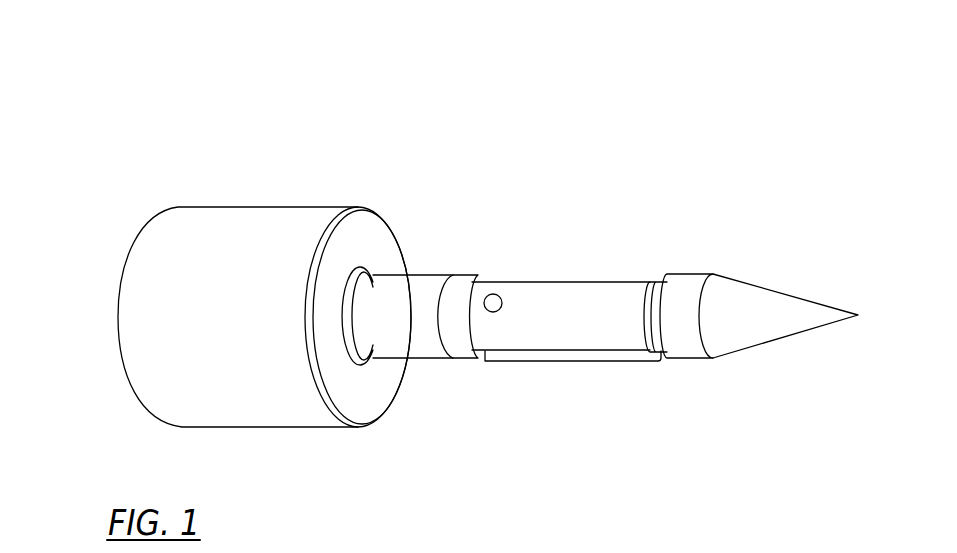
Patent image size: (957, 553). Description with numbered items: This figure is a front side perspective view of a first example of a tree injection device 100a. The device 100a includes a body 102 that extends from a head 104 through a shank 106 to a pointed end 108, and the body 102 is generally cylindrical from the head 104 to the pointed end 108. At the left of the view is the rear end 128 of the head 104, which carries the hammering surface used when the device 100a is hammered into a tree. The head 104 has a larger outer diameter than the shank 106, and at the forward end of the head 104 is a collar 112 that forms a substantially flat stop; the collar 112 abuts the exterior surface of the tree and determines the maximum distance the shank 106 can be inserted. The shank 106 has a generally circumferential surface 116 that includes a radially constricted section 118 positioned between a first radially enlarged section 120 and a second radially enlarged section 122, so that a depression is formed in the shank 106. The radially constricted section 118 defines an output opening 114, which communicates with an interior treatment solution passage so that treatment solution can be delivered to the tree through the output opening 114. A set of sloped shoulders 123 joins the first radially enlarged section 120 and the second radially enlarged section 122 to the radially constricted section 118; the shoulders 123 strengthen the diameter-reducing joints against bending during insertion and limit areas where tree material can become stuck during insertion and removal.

The tree injection device 100a is at (481, 279).
The body 102 is at (481, 343).
The head 104 is at (253, 285).
The shank 106 is at (645, 291).
The pointed end 108 is at (815, 289).
The collar 112 is at (355, 392).
The output opening 114 is at (486, 290).
The circumferential surface 116 is at (680, 358).
The radially constricted section 118 is at (572, 362).
The first radially enlarged section 120 is at (414, 275).
The second radially enlarged section 122 is at (720, 327).
The shoulders 123 is at (465, 352).
The rear end 128 is at (103, 261).